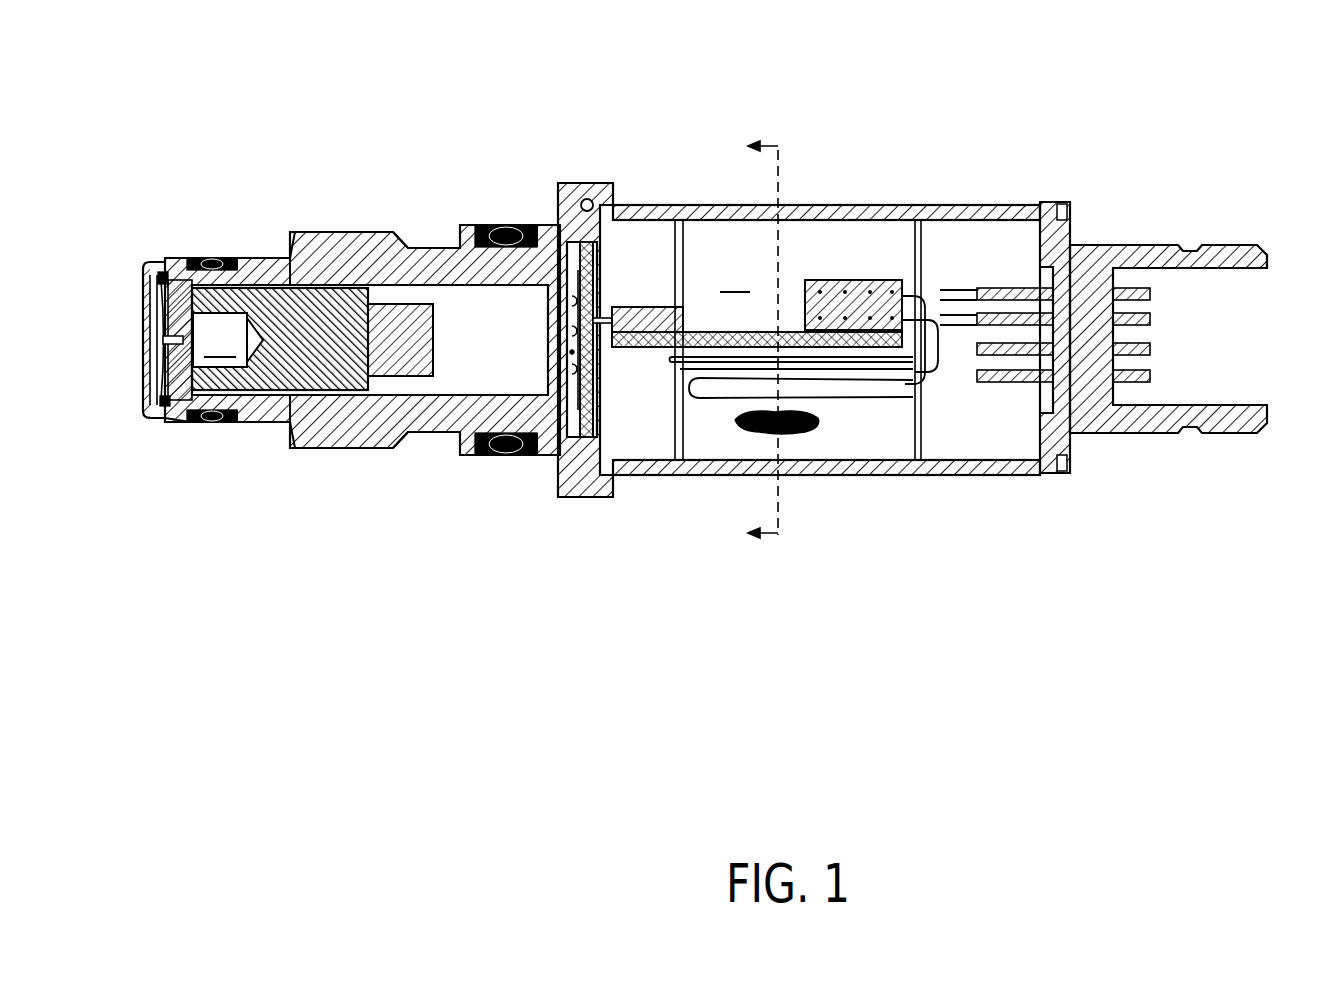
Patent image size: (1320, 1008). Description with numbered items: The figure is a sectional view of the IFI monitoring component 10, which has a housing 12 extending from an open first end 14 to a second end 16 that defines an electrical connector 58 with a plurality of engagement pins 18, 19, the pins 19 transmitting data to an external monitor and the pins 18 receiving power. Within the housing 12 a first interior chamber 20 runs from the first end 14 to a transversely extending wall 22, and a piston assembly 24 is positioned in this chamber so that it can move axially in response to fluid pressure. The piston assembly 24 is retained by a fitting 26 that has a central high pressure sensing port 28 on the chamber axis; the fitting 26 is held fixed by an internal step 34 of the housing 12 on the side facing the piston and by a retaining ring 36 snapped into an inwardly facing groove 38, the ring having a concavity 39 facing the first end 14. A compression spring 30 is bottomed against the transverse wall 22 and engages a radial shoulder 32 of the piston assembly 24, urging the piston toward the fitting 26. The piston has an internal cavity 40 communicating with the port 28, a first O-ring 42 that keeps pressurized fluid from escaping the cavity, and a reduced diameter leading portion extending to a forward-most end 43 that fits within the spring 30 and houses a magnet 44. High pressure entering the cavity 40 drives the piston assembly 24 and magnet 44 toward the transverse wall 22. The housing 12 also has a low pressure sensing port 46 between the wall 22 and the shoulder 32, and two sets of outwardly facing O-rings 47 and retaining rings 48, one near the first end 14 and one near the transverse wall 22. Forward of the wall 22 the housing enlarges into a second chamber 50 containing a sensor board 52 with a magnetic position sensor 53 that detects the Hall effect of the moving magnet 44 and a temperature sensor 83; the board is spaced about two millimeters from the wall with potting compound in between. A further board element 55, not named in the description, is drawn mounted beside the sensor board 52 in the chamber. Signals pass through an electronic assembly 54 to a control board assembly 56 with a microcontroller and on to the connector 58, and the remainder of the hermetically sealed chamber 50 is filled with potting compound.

The IFI monitoring component 10 is at (584, 140).
The housing 12 is at (922, 196).
The first end 14 is at (143, 270).
The second end 16 is at (1263, 417).
The engagement pins 18 is at (1150, 374).
The engagement pins 19 is at (1150, 318).
The first interior chamber 20 is at (437, 382).
The transversely extending wall 22 is at (558, 280).
The piston assembly 24 is at (282, 275).
The fitting 26 is at (163, 408).
The high pressure sensing port 28 is at (180, 339).
The compression spring 30 is at (388, 275).
The radial shoulder 32 is at (330, 278).
The internal step 34 is at (182, 421).
The retaining ring 36 is at (163, 387).
The inwardly facing groove 38 is at (164, 270).
The concavity 39 is at (158, 322).
The internal cavity 40 is at (280, 339).
The first O-ring 42 is at (292, 425).
The forward-most end 43 is at (420, 392).
The magnet 44 is at (406, 266).
The low pressure sensing port 46 is at (450, 256).
The O-rings 47 is at (212, 258).
The retaining rings 48 is at (230, 258).
The second chamber 50 is at (734, 277).
The sensor board 52 is at (567, 448).
The magnetic position sensor 53 is at (597, 372).
The electronic assembly 54 is at (637, 348).
The circuit board 55 is at (666, 306).
The control board assembly 56 is at (831, 280).
The electrical connector 58 is at (1217, 422).
The temperature sensor 83 is at (600, 296).